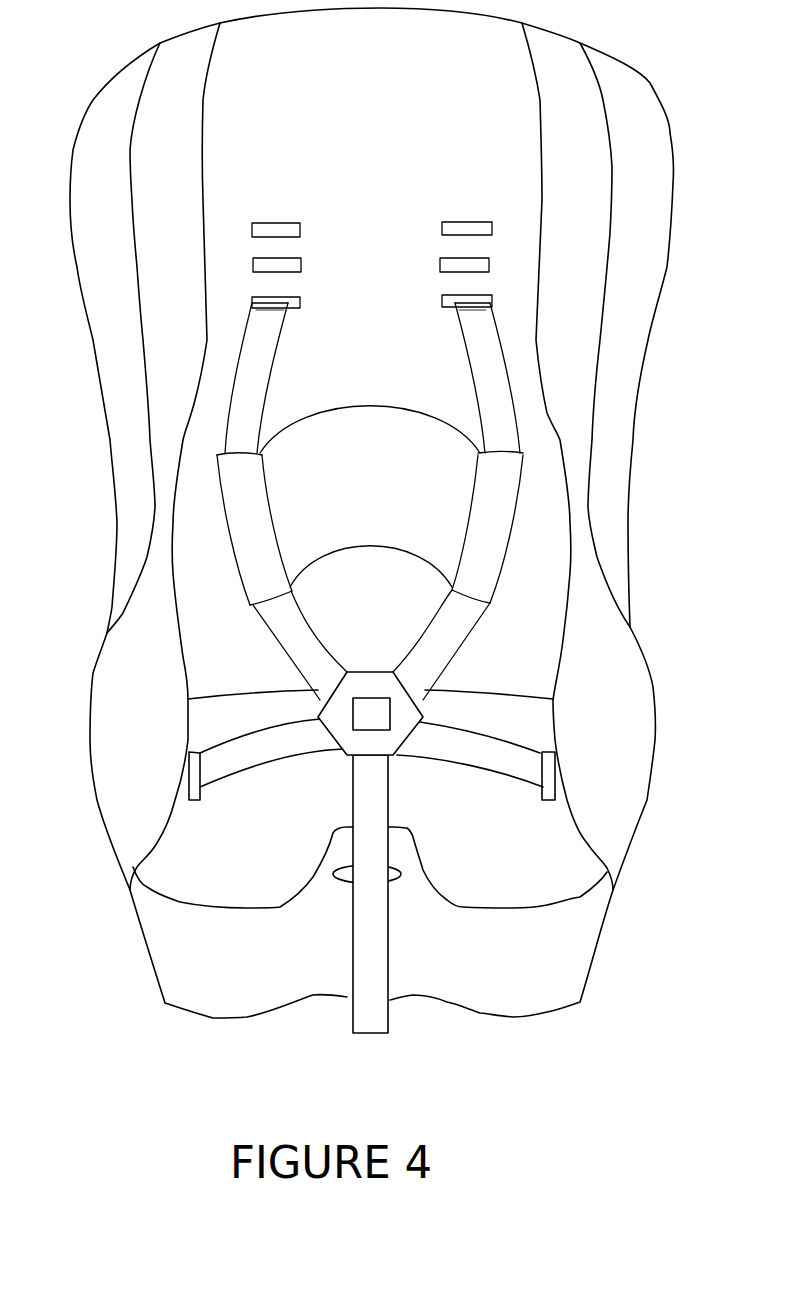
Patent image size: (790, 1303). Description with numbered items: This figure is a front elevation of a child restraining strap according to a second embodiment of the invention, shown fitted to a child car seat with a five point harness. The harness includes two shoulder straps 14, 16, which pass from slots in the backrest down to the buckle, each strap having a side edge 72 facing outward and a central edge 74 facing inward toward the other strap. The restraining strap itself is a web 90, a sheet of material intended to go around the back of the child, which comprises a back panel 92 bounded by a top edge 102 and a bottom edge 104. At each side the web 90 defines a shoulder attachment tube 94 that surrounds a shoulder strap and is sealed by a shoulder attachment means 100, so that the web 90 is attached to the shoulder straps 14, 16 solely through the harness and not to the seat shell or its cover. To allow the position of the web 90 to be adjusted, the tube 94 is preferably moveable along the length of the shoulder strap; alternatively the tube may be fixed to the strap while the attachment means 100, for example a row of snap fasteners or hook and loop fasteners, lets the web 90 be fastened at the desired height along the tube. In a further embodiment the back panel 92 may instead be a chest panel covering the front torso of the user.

The shoulder strap 14 is at (267, 317).
The shoulder strap 16 is at (477, 317).
The side edge of the shoulder strap 72 is at (242, 338).
The central edge of the shoulder strap 74 is at (277, 333).
The web 90 is at (352, 417).
The back panel 92 is at (283, 523).
The shoulder attachment tube 94 is at (260, 570).
The shoulder attachment means 100 is at (477, 497).
The top edge 102 is at (400, 408).
The bottom edge 104 is at (333, 557).